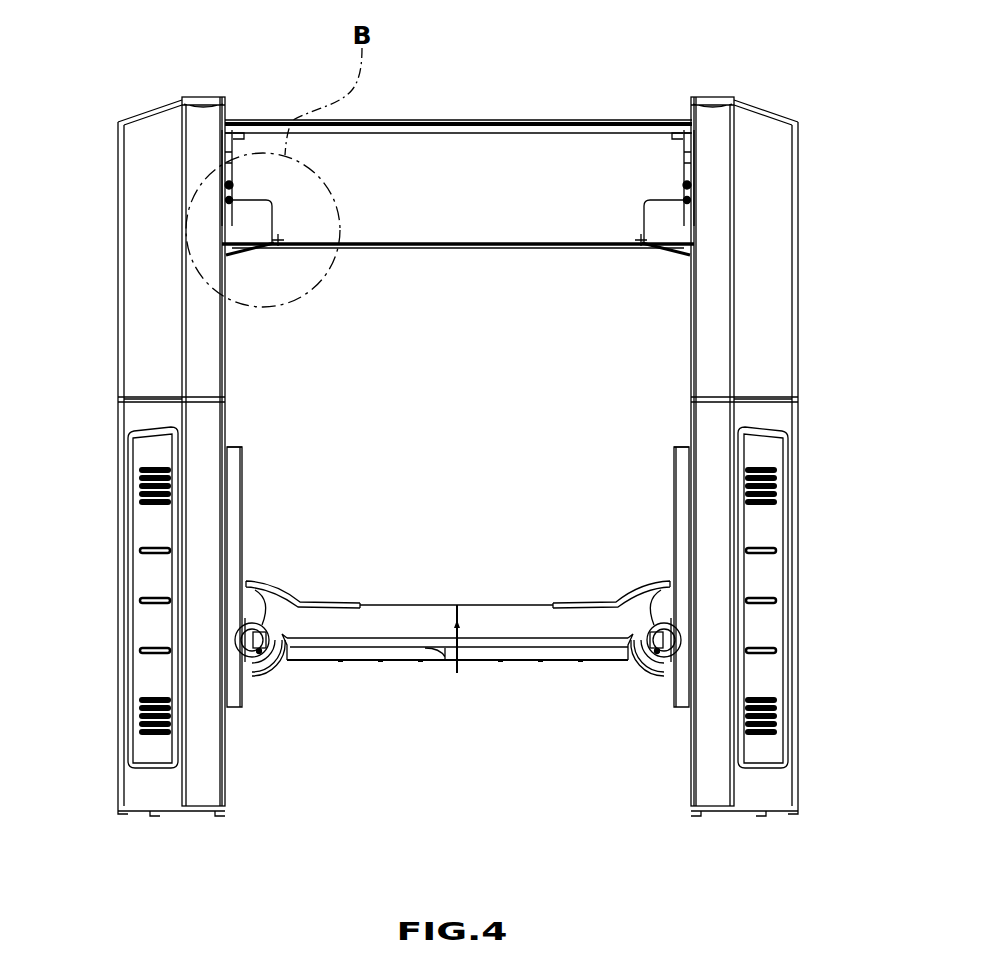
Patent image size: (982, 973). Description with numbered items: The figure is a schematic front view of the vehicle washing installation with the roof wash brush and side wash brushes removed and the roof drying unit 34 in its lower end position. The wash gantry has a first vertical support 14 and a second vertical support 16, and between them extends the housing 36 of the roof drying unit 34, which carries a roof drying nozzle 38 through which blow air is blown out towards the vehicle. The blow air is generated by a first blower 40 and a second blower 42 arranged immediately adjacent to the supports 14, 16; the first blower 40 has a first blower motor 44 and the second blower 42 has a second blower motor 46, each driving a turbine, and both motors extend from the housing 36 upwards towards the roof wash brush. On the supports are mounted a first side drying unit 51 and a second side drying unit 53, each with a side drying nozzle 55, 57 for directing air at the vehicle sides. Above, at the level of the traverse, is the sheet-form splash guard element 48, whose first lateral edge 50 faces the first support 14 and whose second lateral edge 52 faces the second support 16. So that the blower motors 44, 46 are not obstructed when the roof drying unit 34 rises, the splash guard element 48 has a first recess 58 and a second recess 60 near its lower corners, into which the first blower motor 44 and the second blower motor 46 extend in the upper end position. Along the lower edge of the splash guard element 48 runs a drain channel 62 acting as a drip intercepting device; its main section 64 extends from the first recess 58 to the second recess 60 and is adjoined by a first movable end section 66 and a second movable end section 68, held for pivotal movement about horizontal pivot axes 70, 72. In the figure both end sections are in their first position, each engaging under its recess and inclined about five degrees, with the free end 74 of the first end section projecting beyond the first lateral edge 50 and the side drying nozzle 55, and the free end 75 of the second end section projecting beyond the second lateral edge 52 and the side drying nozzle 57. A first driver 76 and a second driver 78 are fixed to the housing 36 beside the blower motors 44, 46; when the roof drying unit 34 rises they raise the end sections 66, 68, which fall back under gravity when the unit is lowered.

The first vertical support 14 is at (197, 790).
The second vertical support 16 is at (706, 790).
The roof drying unit 34 is at (400, 598).
The housing 36 is at (513, 628).
The roof drying nozzle 38 is at (515, 662).
The first blower 40 is at (255, 623).
The second blower 42 is at (660, 625).
The first blower motor 44 is at (254, 672).
The second blower motor 46 is at (662, 672).
The splash guard element 48 is at (412, 161).
The first lateral edge 50 is at (228, 168).
The second lateral edge 52 is at (685, 177).
The first side drying unit 51 is at (243, 438).
The second side drying unit 53 is at (673, 438).
The side drying nozzle 55 is at (243, 483).
The side drying nozzle 57 is at (673, 493).
The first recess 58 is at (250, 212).
The second recess 60 is at (666, 212).
The drain channel 62 is at (407, 253).
The main section 64 is at (486, 246).
The first movable end section 66 is at (263, 247).
The second movable end section 68 is at (648, 250).
The pivot axis 70 is at (280, 240).
The pivot axis 72 is at (640, 240).
The free end 74 is at (228, 246).
The free end 75 is at (690, 256).
The first driver 76 is at (300, 606).
The second driver 78 is at (625, 596).